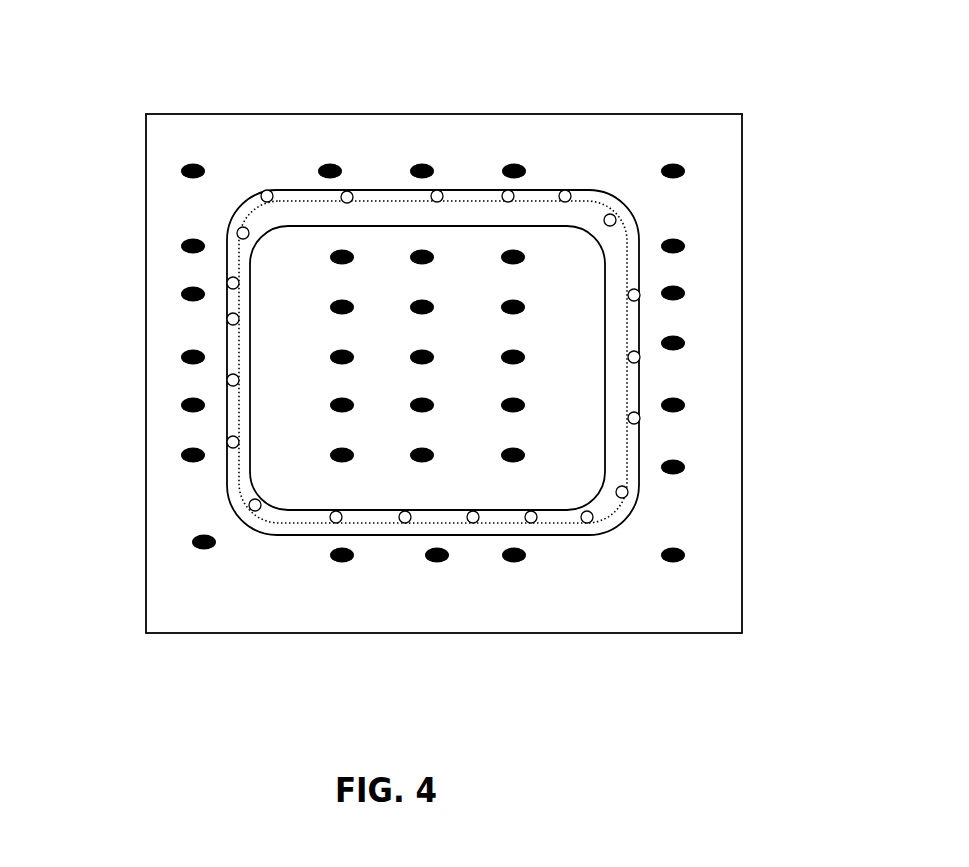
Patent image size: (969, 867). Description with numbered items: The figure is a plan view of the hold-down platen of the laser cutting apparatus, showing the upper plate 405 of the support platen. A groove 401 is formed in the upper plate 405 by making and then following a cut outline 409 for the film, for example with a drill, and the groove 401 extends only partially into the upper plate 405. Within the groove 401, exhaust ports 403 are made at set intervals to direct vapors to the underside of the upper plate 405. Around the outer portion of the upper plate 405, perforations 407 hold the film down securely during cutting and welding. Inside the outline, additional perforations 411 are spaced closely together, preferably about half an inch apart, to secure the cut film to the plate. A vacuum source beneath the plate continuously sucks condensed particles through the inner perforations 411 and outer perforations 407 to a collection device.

The groove 401 is at (607, 200).
The exhaust ports 403 is at (255, 507).
The upper plate 405 is at (182, 213).
The perforations 407 is at (676, 289).
The cut outline 409 is at (630, 448).
The perforations 411 is at (425, 251).